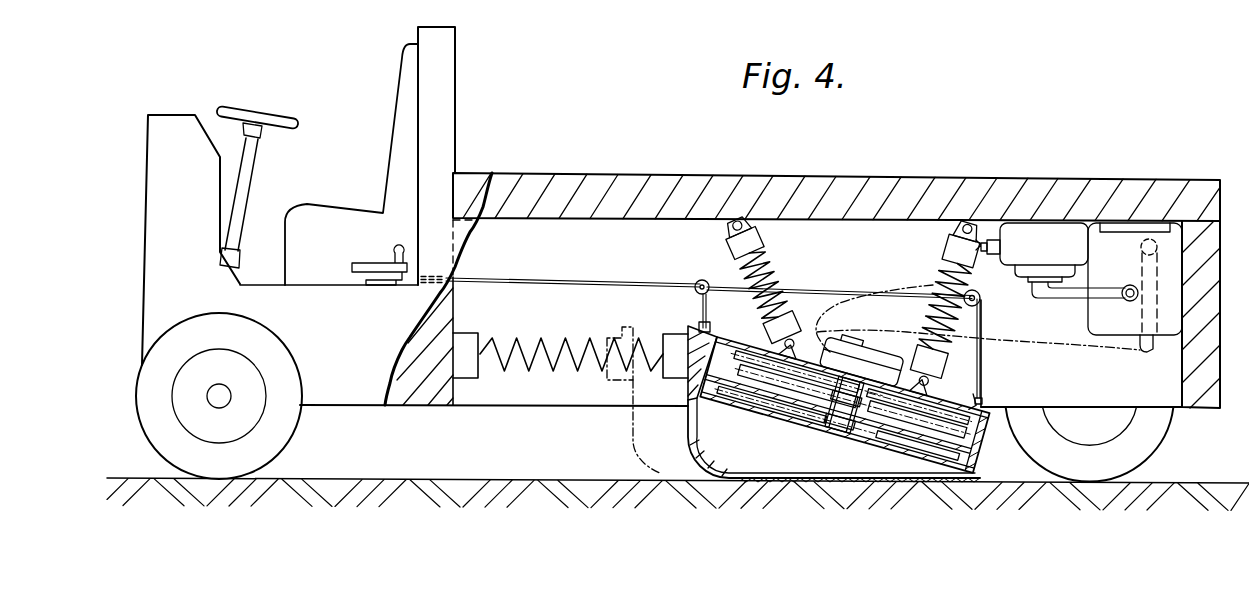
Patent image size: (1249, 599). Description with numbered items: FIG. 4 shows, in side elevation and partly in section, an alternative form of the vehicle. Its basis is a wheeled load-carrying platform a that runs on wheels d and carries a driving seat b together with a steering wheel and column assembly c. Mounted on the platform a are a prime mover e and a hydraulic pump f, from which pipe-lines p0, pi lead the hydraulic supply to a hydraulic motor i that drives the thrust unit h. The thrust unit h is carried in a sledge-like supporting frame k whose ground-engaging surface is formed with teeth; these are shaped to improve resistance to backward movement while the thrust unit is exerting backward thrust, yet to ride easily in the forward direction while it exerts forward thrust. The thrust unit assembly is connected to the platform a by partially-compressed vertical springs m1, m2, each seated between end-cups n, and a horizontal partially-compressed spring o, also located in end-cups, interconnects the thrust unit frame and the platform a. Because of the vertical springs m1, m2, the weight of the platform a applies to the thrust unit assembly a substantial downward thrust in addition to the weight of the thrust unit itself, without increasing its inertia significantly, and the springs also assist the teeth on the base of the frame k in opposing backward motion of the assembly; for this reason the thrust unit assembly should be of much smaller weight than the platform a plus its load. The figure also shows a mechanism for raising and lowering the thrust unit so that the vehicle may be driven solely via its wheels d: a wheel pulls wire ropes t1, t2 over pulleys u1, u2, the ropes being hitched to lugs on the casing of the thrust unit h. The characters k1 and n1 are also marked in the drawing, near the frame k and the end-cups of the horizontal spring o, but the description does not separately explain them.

The wheeled load-carrying platform a is at (657, 174).
The driving seat b is at (333, 217).
The steering wheel and column assembly c is at (265, 132).
The wheels d is at (277, 437).
The prime mover e is at (1167, 278).
The hydraulic pump f is at (1050, 223).
The thrust unit h is at (978, 455).
The hydraulic motor i is at (882, 350).
The sledge-like supporting frame k is at (688, 457).
The hood in raised position k1 is at (633, 434).
The partially-compressed spring m1 is at (765, 260).
The partially-compressed spring m2 is at (942, 283).
The end-cups n is at (764, 238).
The spring abutments n1 is at (472, 333).
The horizontal partially-compressed spring o is at (567, 339).
The pipe-line p0 is at (1097, 347).
The pipe-line pi is at (878, 297).
The wire rope t1 is at (555, 278).
The wire rope t2 is at (863, 287).
The pulley u1 is at (703, 279).
The pulley u2 is at (980, 300).